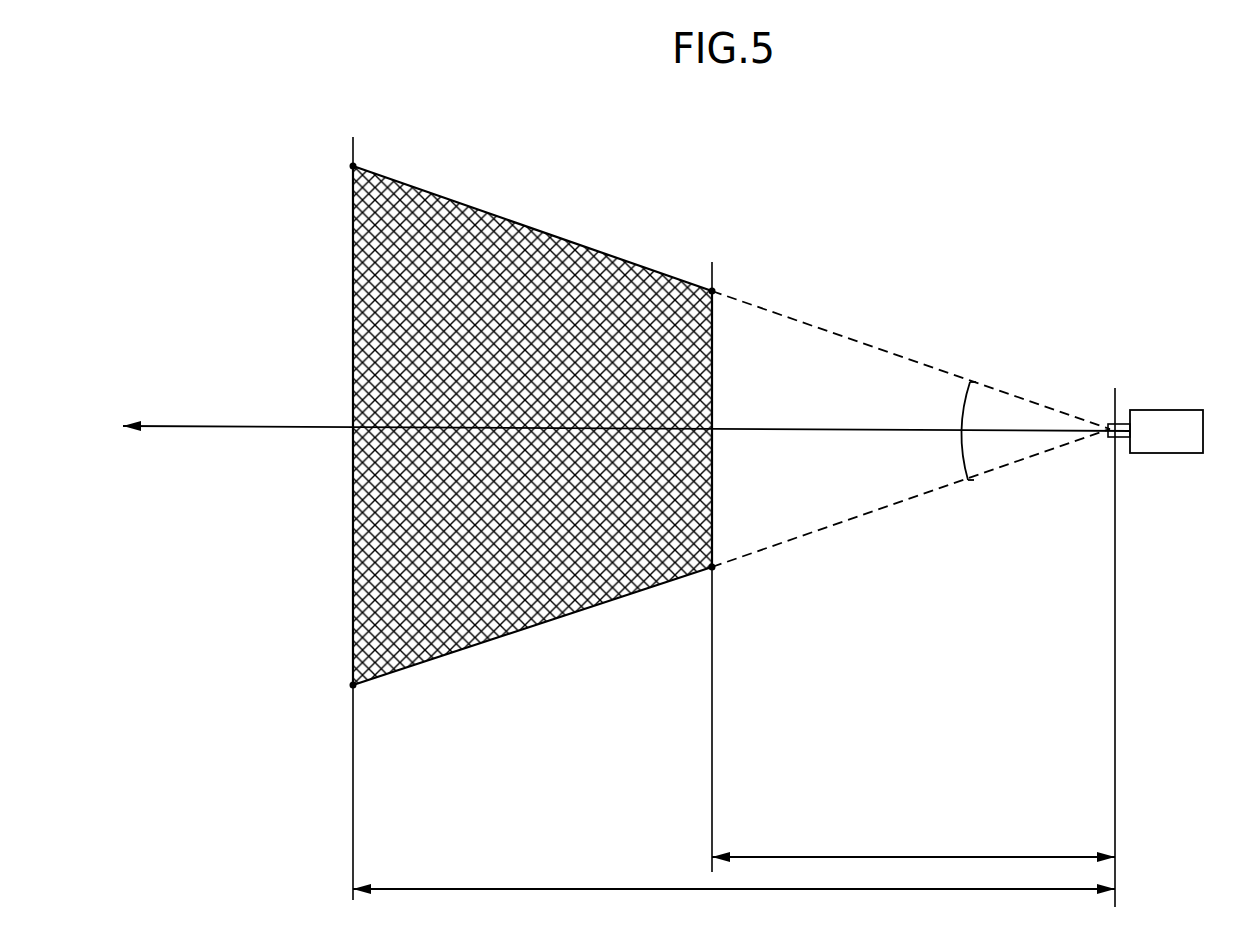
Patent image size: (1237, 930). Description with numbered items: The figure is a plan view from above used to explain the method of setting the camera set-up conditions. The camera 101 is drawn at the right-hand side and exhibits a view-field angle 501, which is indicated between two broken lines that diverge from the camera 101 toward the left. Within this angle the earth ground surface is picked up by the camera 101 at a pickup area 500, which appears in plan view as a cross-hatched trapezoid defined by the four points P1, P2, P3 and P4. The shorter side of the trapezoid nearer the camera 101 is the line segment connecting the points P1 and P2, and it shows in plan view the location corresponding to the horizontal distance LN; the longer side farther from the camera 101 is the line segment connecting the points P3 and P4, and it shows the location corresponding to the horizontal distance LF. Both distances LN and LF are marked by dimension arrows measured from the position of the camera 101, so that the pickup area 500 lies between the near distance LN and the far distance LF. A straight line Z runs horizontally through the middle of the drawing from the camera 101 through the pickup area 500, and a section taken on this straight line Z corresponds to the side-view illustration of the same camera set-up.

The camera 101 is at (1168, 410).
The pickup area 500 is at (522, 238).
The view-field angle 501 is at (962, 463).
The point P1 is at (712, 567).
The point P2 is at (712, 291).
The point P3 is at (353, 685).
The point P4 is at (353, 166).
The horizontal distance L_N LN is at (913, 844).
The horizontal distance L_F LF is at (734, 875).
The straight line Z is at (626, 412).